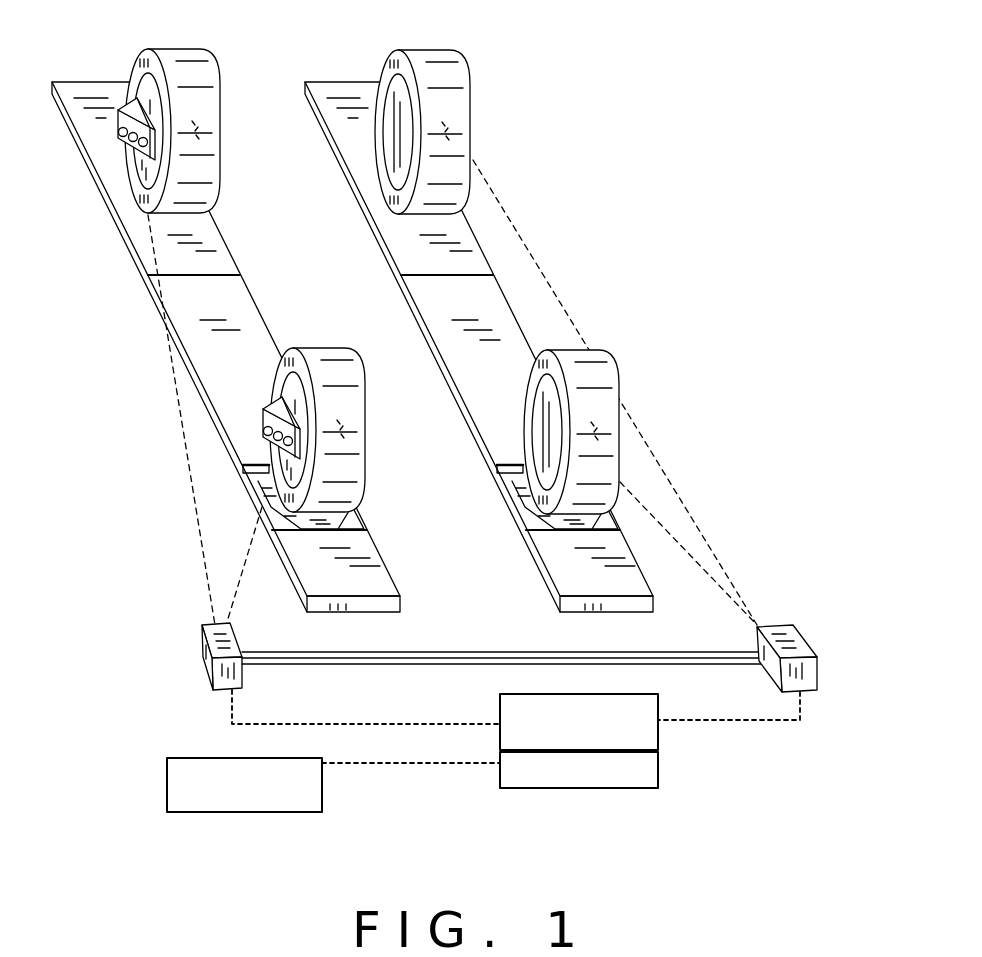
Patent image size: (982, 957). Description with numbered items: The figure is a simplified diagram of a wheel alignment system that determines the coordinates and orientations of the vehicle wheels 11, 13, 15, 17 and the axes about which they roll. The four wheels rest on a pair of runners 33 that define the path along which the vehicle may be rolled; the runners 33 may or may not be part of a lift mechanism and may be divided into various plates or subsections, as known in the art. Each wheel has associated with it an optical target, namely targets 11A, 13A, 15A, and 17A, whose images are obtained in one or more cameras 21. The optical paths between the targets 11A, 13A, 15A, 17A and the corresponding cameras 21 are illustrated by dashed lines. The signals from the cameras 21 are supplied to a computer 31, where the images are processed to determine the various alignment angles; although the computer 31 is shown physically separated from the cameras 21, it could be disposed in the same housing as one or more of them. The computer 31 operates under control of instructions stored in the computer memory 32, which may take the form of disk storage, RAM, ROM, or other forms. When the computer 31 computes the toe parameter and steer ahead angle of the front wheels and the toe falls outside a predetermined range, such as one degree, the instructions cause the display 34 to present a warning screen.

The vehicle wheel 11 is at (347, 382).
The optical target 11A is at (263, 409).
The vehicle wheel 13 is at (620, 427).
The optical target 13A is at (622, 428).
The vehicle wheel 15 is at (466, 123).
The optical target 15A is at (472, 118).
The vehicle wheel 17 is at (200, 63).
The optical target 17A is at (118, 112).
The camera 21 is at (202, 638).
The computer 31 is at (658, 733).
The computer memory 32 is at (530, 780).
The runner 33 is at (227, 253).
The display 34 is at (322, 785).